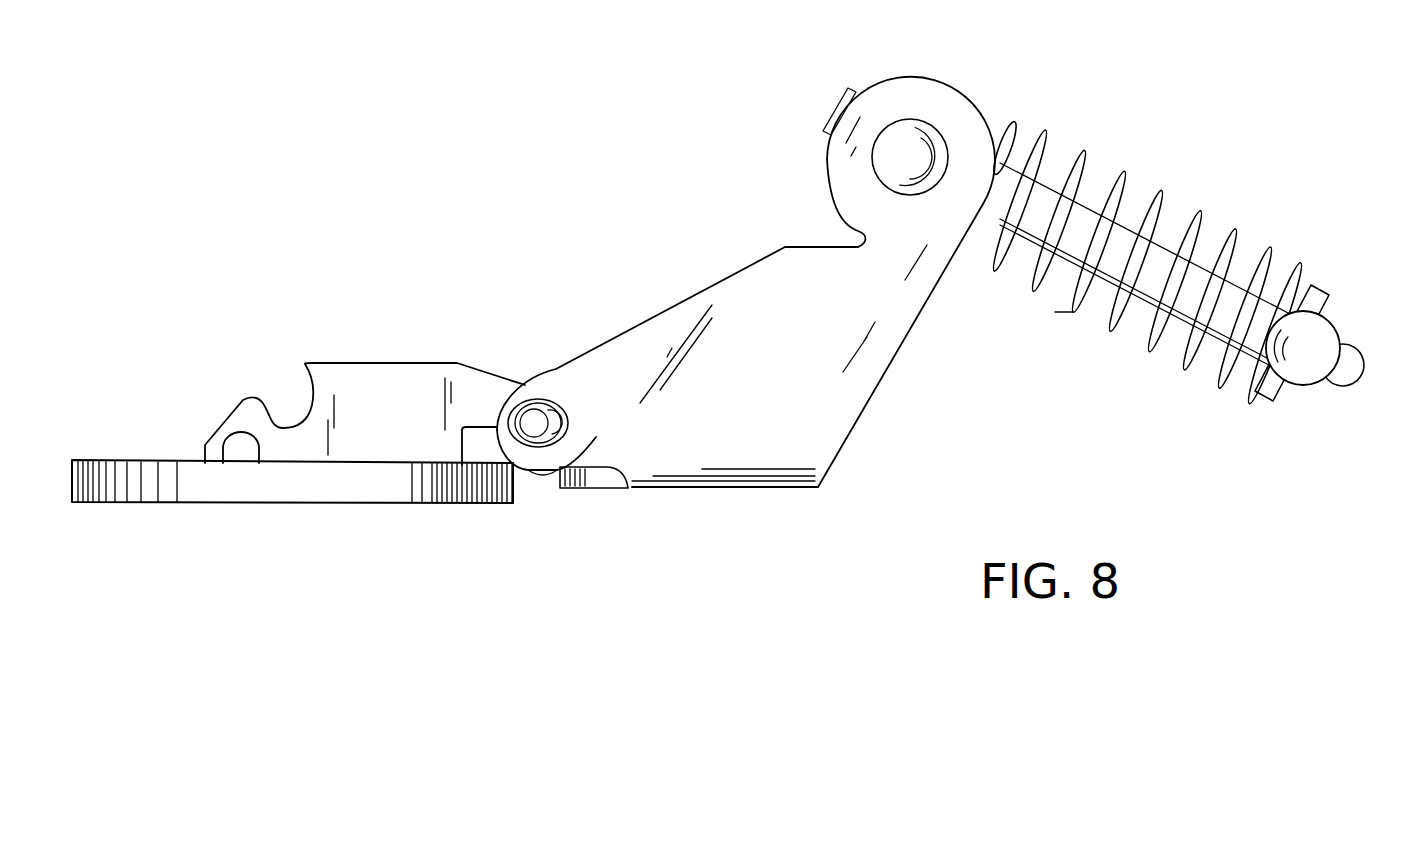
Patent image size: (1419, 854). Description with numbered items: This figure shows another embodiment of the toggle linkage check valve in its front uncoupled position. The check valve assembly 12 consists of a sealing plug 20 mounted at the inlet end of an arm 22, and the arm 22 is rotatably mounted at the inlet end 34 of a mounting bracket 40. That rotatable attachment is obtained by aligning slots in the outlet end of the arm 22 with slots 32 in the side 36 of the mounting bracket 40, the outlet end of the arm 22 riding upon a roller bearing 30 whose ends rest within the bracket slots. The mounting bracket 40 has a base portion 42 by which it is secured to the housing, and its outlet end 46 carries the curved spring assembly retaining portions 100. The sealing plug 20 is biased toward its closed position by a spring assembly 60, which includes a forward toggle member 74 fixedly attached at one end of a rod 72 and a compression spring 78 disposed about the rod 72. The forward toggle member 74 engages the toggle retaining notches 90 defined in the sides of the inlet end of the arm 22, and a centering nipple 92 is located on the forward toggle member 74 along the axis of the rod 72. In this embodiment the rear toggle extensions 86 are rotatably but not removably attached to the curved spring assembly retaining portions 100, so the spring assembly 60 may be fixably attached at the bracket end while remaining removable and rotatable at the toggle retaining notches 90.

The check valve assembly 12 is at (946, 291).
The sealing plug 20 is at (305, 503).
The arm 22 is at (470, 388).
The roller bearing 30 is at (565, 422).
The slots 32 is at (550, 433).
The inlet end of the mounting bracket 34 is at (662, 380).
The side of the mounting bracket 36 is at (860, 383).
The mounting bracket 40 is at (692, 492).
The base portion 42 is at (790, 493).
The outlet end of the mounting bracket 46 is at (892, 320).
The spring assembly 60 is at (1239, 212).
The rod 72 is at (1027, 250).
The forward toggle member 74 is at (1344, 327).
The compression spring 78 is at (1070, 308).
The toggle extension 86 is at (878, 160).
The toggle retaining notches 90 is at (267, 398).
The centering nipple 92 is at (1342, 380).
The curved spring assembly retaining portions 100 is at (932, 92).